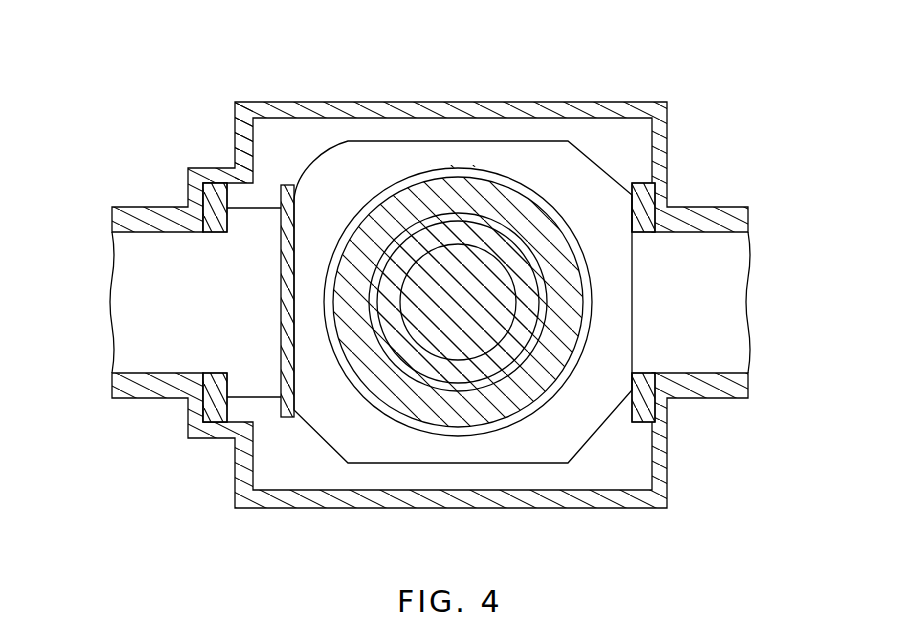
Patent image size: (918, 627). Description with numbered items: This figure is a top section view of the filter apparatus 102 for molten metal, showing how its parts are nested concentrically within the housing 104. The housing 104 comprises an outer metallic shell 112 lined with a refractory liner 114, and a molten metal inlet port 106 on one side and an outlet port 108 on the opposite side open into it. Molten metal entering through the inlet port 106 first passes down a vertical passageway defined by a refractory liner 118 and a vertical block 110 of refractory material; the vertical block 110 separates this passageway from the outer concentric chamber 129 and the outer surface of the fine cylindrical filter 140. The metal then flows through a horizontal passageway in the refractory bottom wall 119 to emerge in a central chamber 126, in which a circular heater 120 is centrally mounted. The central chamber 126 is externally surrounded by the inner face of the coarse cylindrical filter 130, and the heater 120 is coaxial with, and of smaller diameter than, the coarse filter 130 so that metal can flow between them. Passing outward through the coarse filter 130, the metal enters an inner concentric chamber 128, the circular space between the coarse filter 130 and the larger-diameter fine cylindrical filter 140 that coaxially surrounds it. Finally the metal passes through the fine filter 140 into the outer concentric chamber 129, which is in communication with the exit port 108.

The filter apparatus 102 is at (697, 118).
The housing 104 is at (573, 102).
The molten metal inlet port 106 is at (138, 285).
The outlet port 108 is at (723, 272).
The vertical block 110 is at (281, 292).
The metallic shell 112 is at (632, 507).
The refractory liner 114 is at (658, 472).
The refractory liner 118 is at (210, 407).
The refractory bottom wall 119 is at (272, 468).
The cylindrical heater 120 is at (482, 304).
The central chamber 126 is at (528, 305).
The inner concentric chamber 128 is at (560, 333).
The outer concentric chamber 129 is at (383, 450).
The coarse cylindrical filter 130 is at (540, 275).
The fine cylindrical filter 140 is at (425, 168).